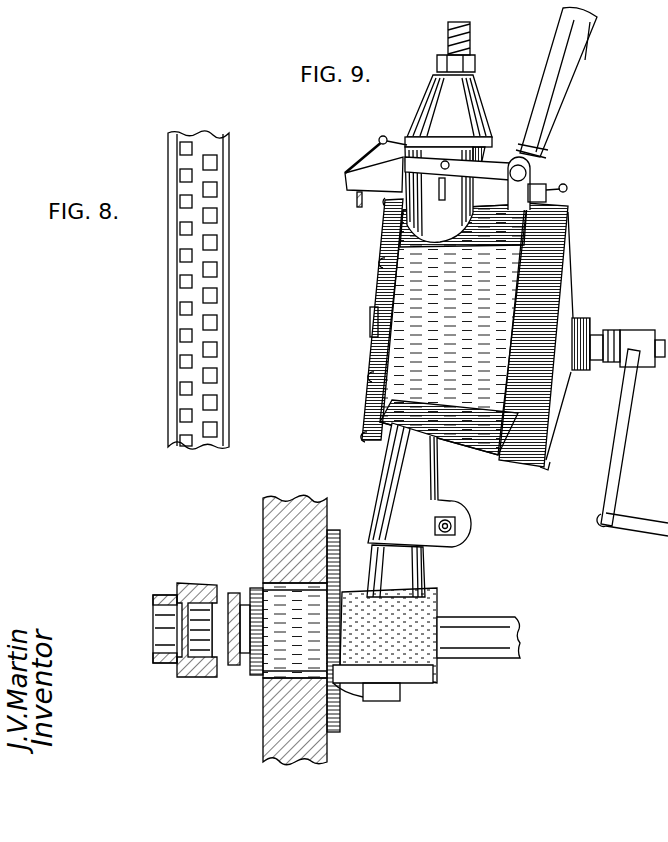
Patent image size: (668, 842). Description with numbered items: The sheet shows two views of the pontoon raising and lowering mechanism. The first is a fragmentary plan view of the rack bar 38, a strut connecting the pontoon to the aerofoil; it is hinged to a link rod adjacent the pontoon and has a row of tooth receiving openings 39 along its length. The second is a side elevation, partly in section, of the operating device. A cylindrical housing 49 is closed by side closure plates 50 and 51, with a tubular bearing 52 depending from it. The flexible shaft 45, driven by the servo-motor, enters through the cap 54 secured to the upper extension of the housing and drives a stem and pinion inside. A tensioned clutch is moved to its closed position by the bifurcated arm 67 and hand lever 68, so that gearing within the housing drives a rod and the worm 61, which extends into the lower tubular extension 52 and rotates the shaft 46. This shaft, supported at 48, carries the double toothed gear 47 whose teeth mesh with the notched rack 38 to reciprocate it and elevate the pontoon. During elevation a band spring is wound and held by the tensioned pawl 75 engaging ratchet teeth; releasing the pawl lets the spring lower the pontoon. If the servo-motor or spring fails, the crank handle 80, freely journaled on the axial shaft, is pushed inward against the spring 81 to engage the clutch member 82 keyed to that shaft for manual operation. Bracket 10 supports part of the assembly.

In FIG. 9, the supporting bracket 10 is at (355, 200).
In FIG. 8, the rack bar 38 is at (225, 298).
In FIG. 8, the tooth receiving openings 39 is at (178, 258).
In FIG. 9, the flexible shaft 45 is at (448, 36).
In FIG. 9, the shaft 46 is at (478, 637).
In FIG. 9, the double toothed gear 47 is at (205, 580).
In FIG. 9, the shaft support 48 is at (268, 520).
In FIG. 9, the cylindrical housing 49 is at (453, 329).
In FIG. 9, the side closure plate 50 is at (380, 288).
In FIG. 9, the side closure plate 51 is at (567, 303).
In FIG. 9, the tubular bearing 52 is at (419, 510).
In FIG. 9, the cap 54 is at (448, 158).
In FIG. 9, the worm 61 is at (438, 598).
In FIG. 9, the bifurcated arm 67 is at (498, 178).
In FIG. 9, the hand lever 68 is at (556, 82).
In FIG. 9, the tensioned pawl 75 is at (549, 187).
In FIG. 9, the crank handle 80 is at (617, 437).
In FIG. 9, the spring 81 is at (612, 330).
In FIG. 9, the clutch member 82 is at (599, 362).